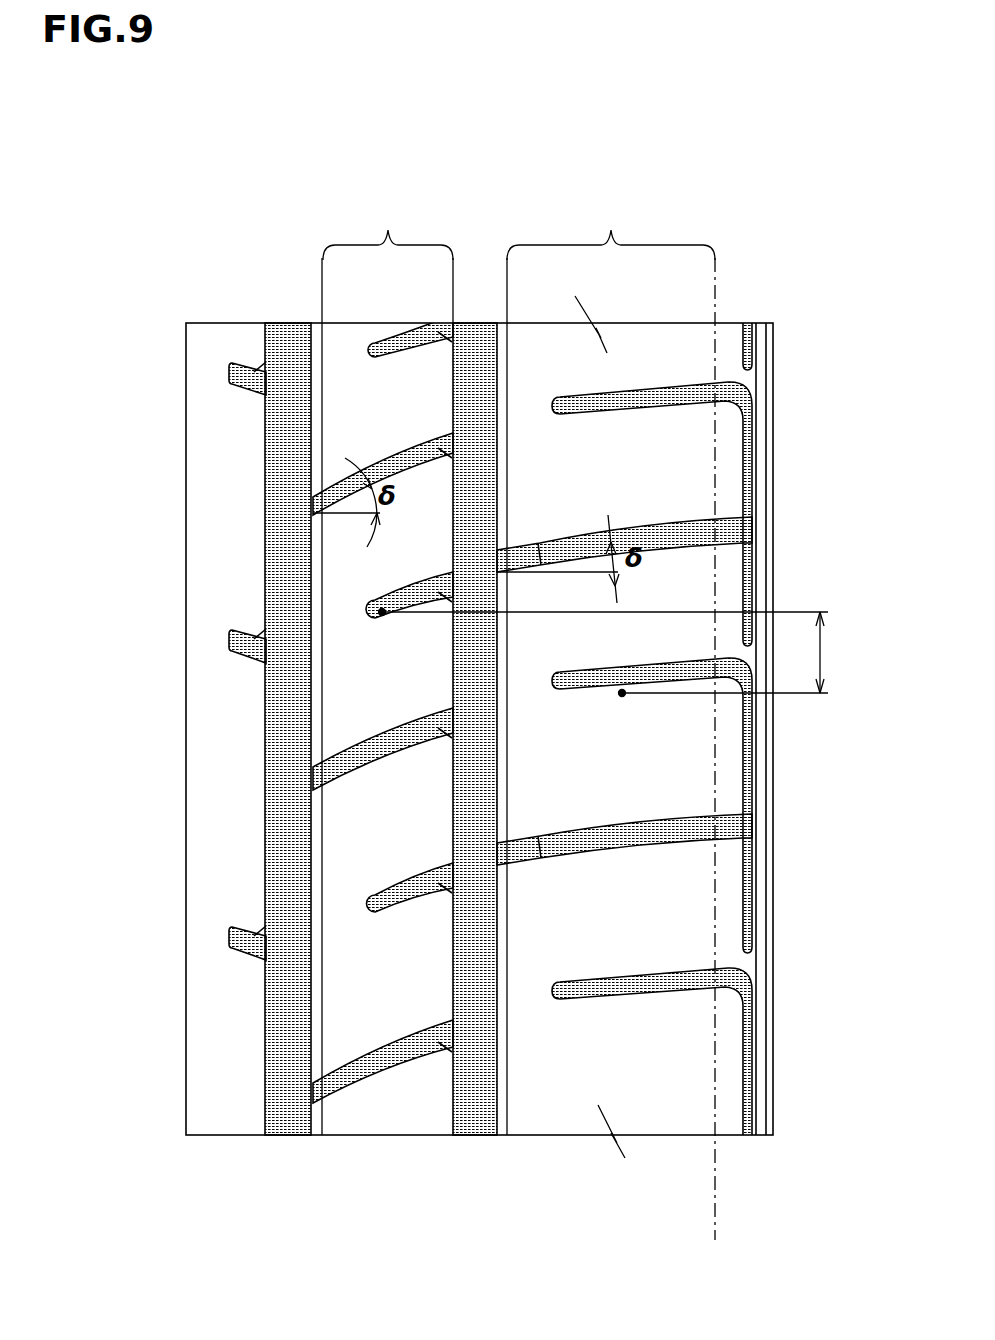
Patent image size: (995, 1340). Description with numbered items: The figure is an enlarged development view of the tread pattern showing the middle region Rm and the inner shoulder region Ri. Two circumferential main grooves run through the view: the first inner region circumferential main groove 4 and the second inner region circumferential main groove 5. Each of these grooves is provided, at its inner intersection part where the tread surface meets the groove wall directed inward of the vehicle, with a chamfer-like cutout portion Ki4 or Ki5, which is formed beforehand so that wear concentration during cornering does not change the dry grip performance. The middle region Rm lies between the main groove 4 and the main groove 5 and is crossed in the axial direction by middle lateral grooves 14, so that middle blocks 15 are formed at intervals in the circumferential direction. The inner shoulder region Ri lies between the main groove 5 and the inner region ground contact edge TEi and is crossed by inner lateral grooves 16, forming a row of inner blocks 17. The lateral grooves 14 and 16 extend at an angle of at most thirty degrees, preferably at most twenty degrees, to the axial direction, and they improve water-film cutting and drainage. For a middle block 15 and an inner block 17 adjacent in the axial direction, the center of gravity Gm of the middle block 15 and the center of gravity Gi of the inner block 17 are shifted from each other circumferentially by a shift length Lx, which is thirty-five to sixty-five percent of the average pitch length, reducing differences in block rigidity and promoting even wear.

The first inner region circumferential main groove 4 is at (281, 1113).
The second inner region circumferential main groove 5 is at (467, 1113).
The middle lateral groove 14 is at (380, 1076).
The middle block 15 is at (398, 700).
The inner lateral groove 16 is at (660, 812).
The inner block 17 is at (637, 783).
The cutout portion Ki4 is at (318, 1113).
The cutout portion Ki5 is at (504, 1113).
The center of gravity of the middle block Gm is at (386, 630).
The center of gravity of the inner block Gi is at (621, 709).
The shift length Lx is at (609, 652).
The inner region ground contact edge TEi is at (716, 298).
The middle region Rm is at (388, 261).
The inner shoulder region Ri is at (611, 230).